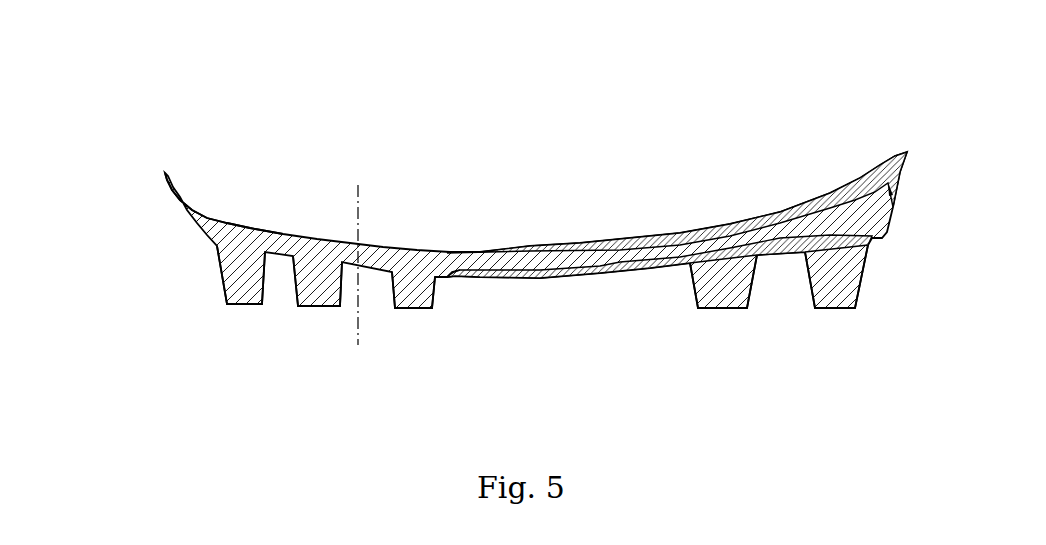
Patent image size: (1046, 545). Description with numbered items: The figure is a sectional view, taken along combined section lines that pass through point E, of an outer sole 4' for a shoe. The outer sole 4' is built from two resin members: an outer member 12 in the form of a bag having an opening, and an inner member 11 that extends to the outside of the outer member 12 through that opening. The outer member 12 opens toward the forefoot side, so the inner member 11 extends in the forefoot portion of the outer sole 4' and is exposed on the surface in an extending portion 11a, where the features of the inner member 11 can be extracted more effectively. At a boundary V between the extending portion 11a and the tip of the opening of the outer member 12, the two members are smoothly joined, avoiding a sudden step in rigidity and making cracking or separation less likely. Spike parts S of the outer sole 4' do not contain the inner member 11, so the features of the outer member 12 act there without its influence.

The outer sole 4' is at (505, 219).
The inner member 11 is at (413, 263).
The extending portion 11a is at (243, 224).
The outer member 12 is at (590, 243).
The section line point E is at (359, 247).
The boundary V is at (447, 279).
The spike parts S is at (240, 307).